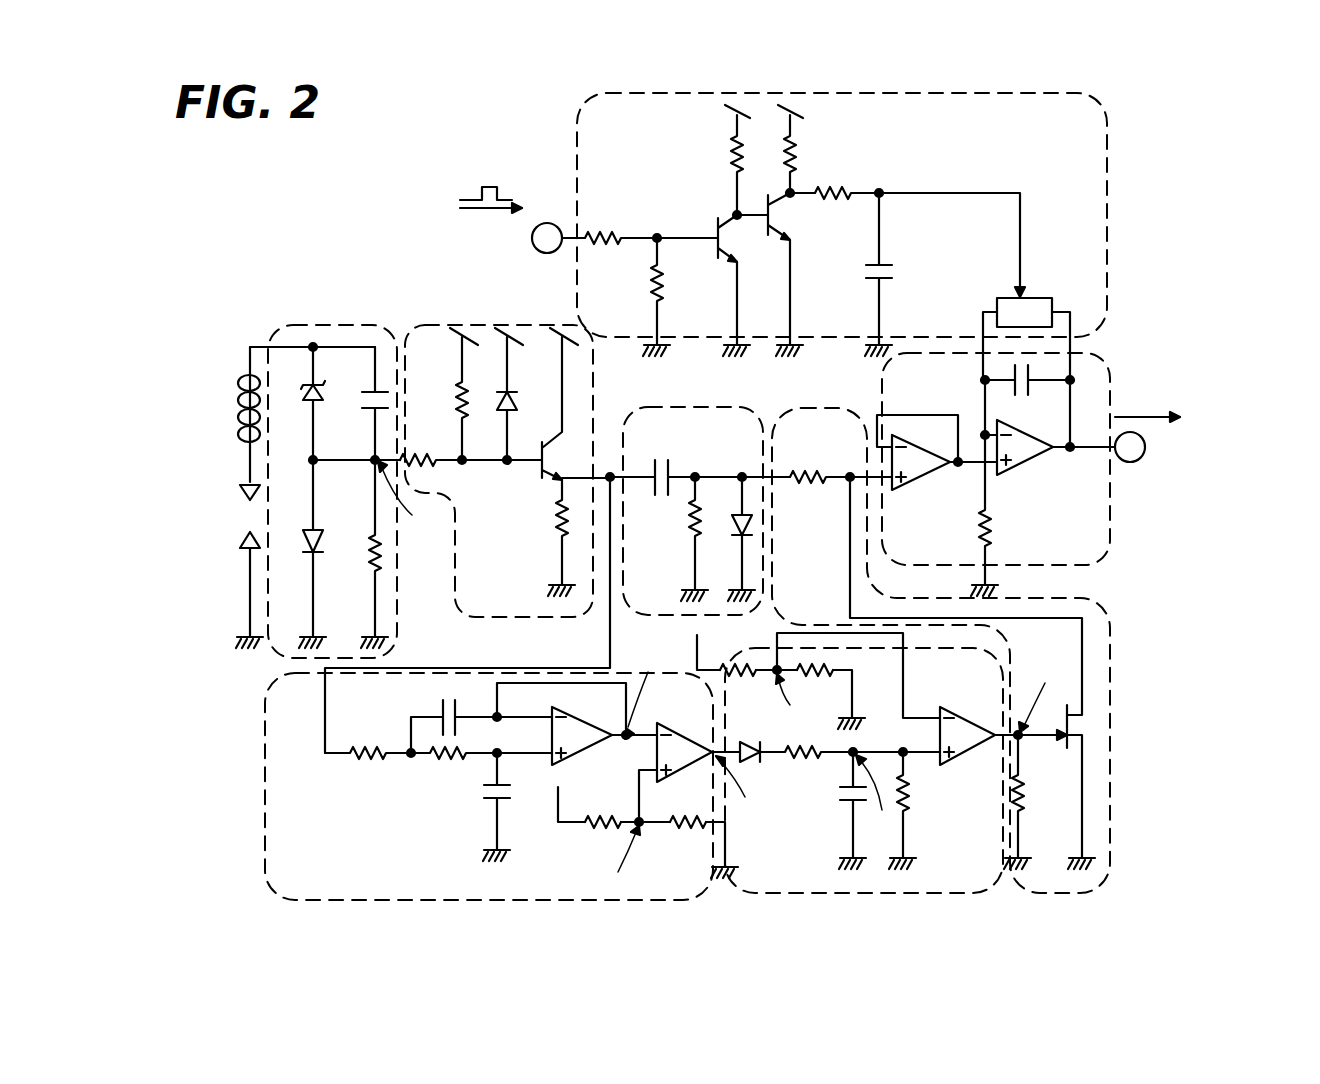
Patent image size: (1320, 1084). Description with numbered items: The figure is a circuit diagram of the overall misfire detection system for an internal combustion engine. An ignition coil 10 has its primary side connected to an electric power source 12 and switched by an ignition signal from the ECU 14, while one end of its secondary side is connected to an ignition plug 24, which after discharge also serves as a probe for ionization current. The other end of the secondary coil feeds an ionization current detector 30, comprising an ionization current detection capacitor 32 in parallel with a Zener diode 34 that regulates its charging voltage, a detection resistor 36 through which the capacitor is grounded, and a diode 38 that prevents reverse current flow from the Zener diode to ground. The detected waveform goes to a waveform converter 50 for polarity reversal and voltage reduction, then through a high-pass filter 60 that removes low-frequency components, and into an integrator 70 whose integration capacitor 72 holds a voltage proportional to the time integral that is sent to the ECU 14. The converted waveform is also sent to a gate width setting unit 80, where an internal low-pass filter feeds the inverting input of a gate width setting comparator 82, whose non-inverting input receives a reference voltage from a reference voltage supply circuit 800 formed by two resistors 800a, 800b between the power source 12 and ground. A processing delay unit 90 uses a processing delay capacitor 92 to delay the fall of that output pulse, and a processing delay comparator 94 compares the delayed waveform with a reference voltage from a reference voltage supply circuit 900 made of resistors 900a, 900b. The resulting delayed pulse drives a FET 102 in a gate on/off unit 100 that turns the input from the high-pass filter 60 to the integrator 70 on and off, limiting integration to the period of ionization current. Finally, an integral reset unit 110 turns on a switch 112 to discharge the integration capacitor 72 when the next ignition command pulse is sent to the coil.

The ignition coil 10 is at (237, 399).
The electric power source 12 is at (708, 643).
The ECU 14 is at (1196, 407).
The ignition plug 24 is at (240, 522).
The ionization current detector 30 is at (325, 452).
The ionization current detection capacitor 32 is at (370, 410).
The Zener diode 34 is at (306, 405).
The detection resistor 36 is at (370, 535).
The diode 38 is at (310, 529).
The waveform converter 50 is at (449, 323).
The high-pass filter 60 is at (660, 405).
The integrator 70 is at (1063, 457).
The integration capacitor 72 is at (1030, 377).
The gate width setting unit 80 is at (469, 770).
The gate width setting comparator 82 is at (685, 725).
The reference voltage supply circuit 800 is at (588, 830).
The resistor 800a is at (598, 815).
The resistor 800b is at (688, 824).
The processing delay unit 90 is at (887, 769).
The processing delay capacitor 92 is at (840, 817).
The processing delay comparator 94 is at (968, 708).
The reference voltage supply circuit 900 is at (781, 657).
The resistor 900a is at (733, 675).
The resistor 900b is at (815, 665).
The gate on/off unit 100 is at (991, 650).
The FET 102 is at (1090, 735).
The integral reset unit 110 is at (827, 236).
The switch 112 is at (1042, 298).